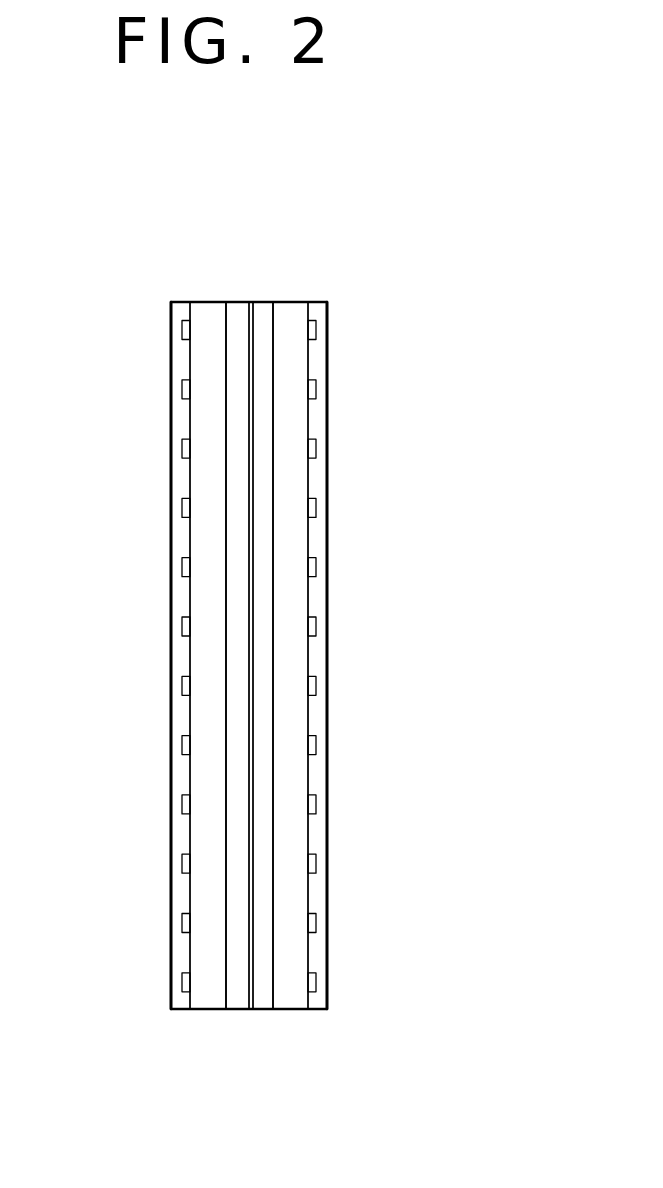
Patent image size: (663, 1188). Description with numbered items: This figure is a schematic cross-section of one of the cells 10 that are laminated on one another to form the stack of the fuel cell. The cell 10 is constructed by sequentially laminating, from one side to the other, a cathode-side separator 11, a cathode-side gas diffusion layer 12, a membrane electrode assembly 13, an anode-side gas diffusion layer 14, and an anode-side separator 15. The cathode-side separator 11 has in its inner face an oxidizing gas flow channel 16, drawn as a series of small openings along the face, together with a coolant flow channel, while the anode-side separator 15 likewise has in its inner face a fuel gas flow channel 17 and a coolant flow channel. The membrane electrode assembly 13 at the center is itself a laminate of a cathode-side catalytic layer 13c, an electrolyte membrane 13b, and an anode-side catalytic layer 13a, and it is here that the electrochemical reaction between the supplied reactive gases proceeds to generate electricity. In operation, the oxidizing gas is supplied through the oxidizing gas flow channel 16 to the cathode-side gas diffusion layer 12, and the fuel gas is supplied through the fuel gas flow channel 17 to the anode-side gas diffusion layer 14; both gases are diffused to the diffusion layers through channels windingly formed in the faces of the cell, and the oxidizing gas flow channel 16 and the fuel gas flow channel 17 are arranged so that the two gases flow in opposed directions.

The cell 10 is at (143, 550).
The cathode-side separator 11 is at (175, 802).
The cathode-side gas diffusion layer 12 is at (205, 717).
The membrane electrode assembly 13 is at (273, 286).
The anode-side catalytic layer 13a is at (265, 885).
The electrolyte membrane 13b is at (254, 960).
The cathode-side catalytic layer 13c is at (236, 438).
The anode-side gas diffusion layer 14 is at (292, 775).
The anode-side separator 15 is at (318, 663).
The oxidizing gas flow channel 16 is at (183, 331).
The fuel gas flow channel 17 is at (316, 447).